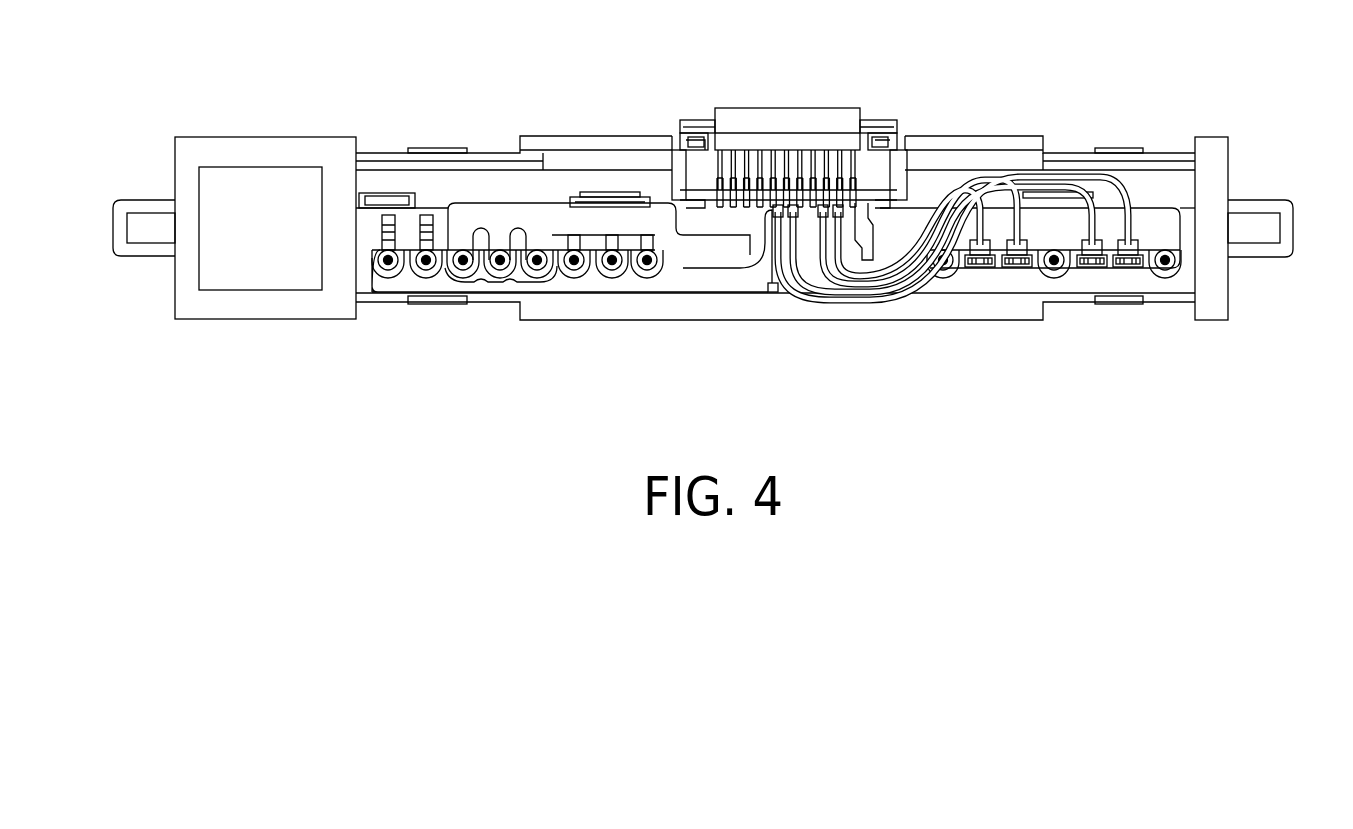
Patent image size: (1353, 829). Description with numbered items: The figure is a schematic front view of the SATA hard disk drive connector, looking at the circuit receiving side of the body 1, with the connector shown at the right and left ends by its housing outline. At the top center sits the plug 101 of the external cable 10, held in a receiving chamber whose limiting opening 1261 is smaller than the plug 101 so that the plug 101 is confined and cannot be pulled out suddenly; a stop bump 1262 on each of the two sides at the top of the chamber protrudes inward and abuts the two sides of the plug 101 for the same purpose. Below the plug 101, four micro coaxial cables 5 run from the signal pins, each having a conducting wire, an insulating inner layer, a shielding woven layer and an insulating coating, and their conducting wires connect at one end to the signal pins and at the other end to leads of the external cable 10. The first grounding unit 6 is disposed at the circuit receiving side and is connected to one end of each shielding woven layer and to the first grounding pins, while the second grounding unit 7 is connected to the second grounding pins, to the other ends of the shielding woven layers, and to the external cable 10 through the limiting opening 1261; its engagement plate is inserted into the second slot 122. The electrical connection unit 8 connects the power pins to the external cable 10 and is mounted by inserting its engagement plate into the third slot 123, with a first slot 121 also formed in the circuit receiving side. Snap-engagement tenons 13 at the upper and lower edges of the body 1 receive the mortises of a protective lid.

The body 1 is at (1253, 86).
The micro coaxial cables 5 is at (853, 302).
The first grounding unit 6 is at (1058, 228).
The second grounding unit 7 is at (613, 282).
The electrical connection unit 8 is at (500, 218).
The external cable 10 is at (768, 103).
The snap-engagement tenons 13 is at (433, 148).
The plug 101 is at (873, 160).
The first slot 121 is at (1065, 192).
The second slot 122 is at (776, 285).
The third slot 123 is at (597, 192).
The limiting opening 1261 is at (688, 140).
The stop bumps 1262 is at (636, 160).